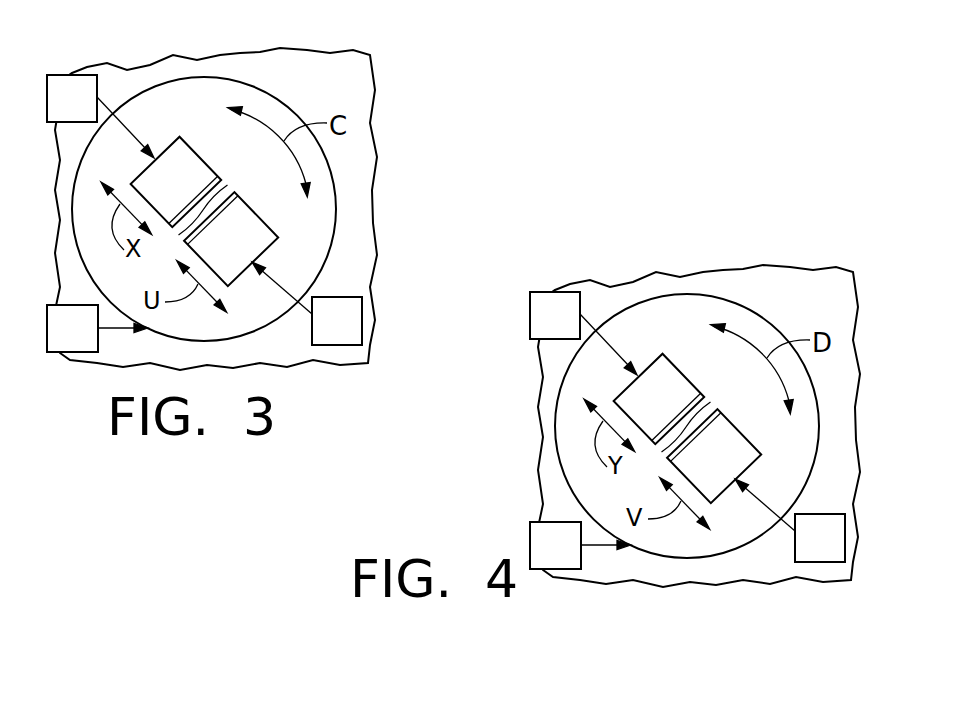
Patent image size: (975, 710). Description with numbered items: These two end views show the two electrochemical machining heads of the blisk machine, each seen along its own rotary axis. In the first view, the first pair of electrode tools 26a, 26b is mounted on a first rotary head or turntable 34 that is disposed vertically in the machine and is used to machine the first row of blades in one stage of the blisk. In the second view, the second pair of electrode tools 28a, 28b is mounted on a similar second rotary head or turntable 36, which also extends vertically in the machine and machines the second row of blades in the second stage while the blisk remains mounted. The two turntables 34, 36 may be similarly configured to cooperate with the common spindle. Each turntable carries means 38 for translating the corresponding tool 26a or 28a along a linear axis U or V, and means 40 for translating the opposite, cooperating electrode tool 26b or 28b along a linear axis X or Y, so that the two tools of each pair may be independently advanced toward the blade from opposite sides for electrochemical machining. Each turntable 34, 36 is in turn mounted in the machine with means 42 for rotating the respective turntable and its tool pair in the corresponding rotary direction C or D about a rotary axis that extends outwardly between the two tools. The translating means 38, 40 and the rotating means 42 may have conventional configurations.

In FIG. 3, the first electrode tool 26a is at (227, 235).
In FIG. 3, the first electrode tool 26b is at (174, 180).
In FIG. 4, the second electrode tool 28a is at (710, 452).
In FIG. 4, the second electrode tool 28b is at (657, 397).
In FIG. 3, the first rotary head or turntable 34 is at (264, 164).
In FIG. 4, the second rotary head or turntable 36 is at (687, 426).
In FIG. 3, the tool translating means 38 is at (355, 339).
In FIG. 4, the tool translating means 38 is at (790, 520).
In FIG. 3, the tool translating means 40 is at (90, 115).
In FIG. 4, the tool translating means 40 is at (583, 333).
In FIG. 3, the rotating means 42 is at (90, 346).
In FIG. 4, the rotating means 42 is at (580, 545).